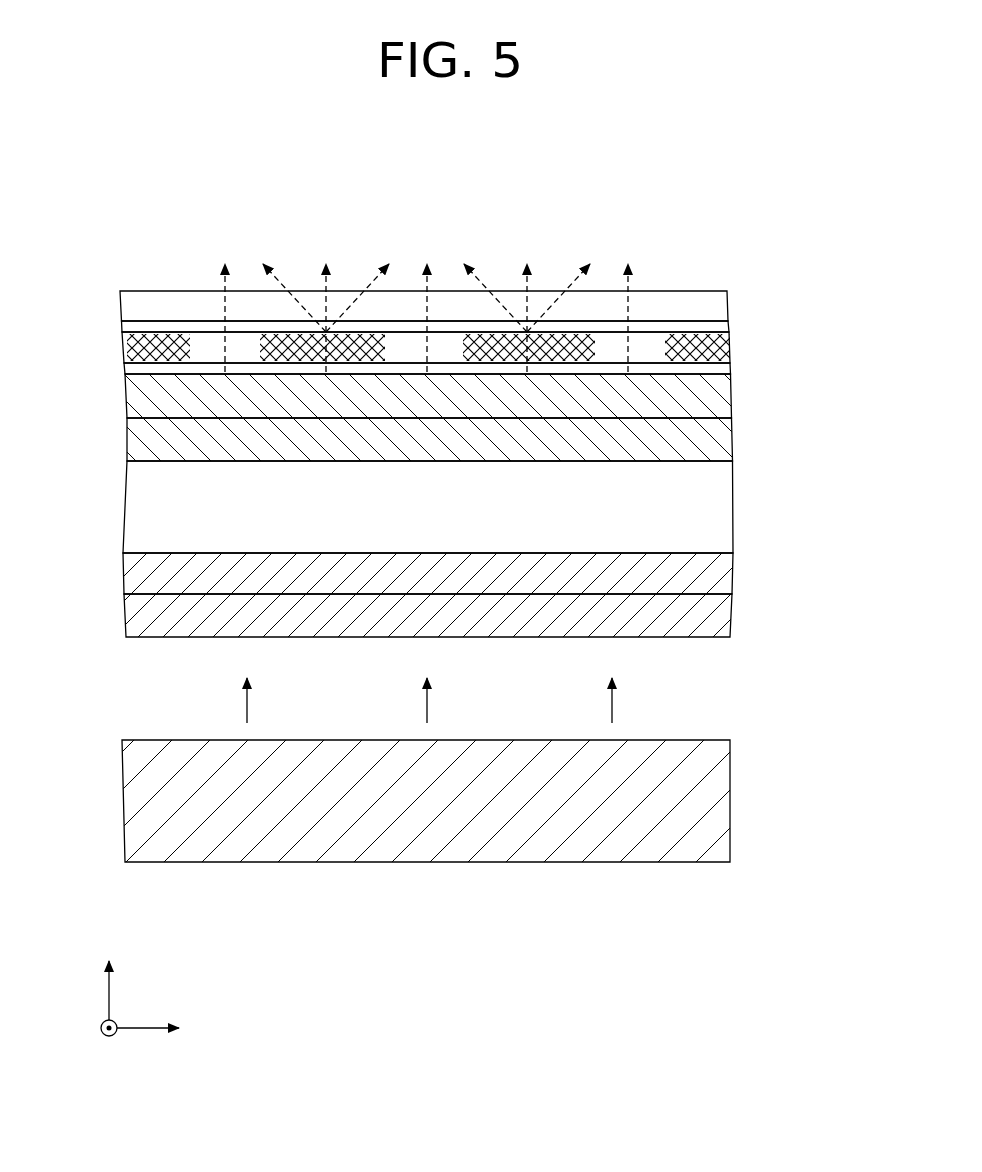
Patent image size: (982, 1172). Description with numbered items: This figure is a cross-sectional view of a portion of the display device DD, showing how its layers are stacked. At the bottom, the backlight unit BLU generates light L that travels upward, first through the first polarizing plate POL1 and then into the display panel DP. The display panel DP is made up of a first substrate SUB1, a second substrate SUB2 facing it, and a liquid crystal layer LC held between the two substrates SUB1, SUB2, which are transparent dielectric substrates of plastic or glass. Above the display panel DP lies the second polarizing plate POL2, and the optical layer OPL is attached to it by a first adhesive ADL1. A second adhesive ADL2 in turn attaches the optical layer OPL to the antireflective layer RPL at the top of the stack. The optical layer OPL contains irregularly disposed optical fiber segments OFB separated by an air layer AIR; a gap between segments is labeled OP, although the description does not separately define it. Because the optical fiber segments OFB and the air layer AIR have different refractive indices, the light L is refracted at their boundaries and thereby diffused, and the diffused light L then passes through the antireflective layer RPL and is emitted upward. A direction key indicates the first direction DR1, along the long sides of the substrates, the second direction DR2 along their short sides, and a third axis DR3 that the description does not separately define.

The display device DD is at (695, 221).
The antireflective layer RPL is at (718, 305).
The second adhesive ADL2 is at (718, 328).
The optical layer OPL is at (429, 349).
The optical fiber segments OFB is at (133, 340).
The opening OP is at (213, 336).
The air layer AIR is at (168, 369).
The first adhesive ADL1 is at (718, 372).
The second polarizing plate POL2 is at (707, 397).
The display panel DP is at (837, 428).
The second substrate SUB2 is at (718, 440).
The liquid crystal layer LC is at (718, 510).
The first substrate SUB1 is at (705, 575).
The first polarizing plate POL1 is at (710, 615).
The backlight unit BLU is at (705, 800).
The light L is at (423, 479).
The first direction DR1 is at (110, 1045).
The second direction DR2 is at (171, 1029).
The third direction DR3 is at (110, 975).